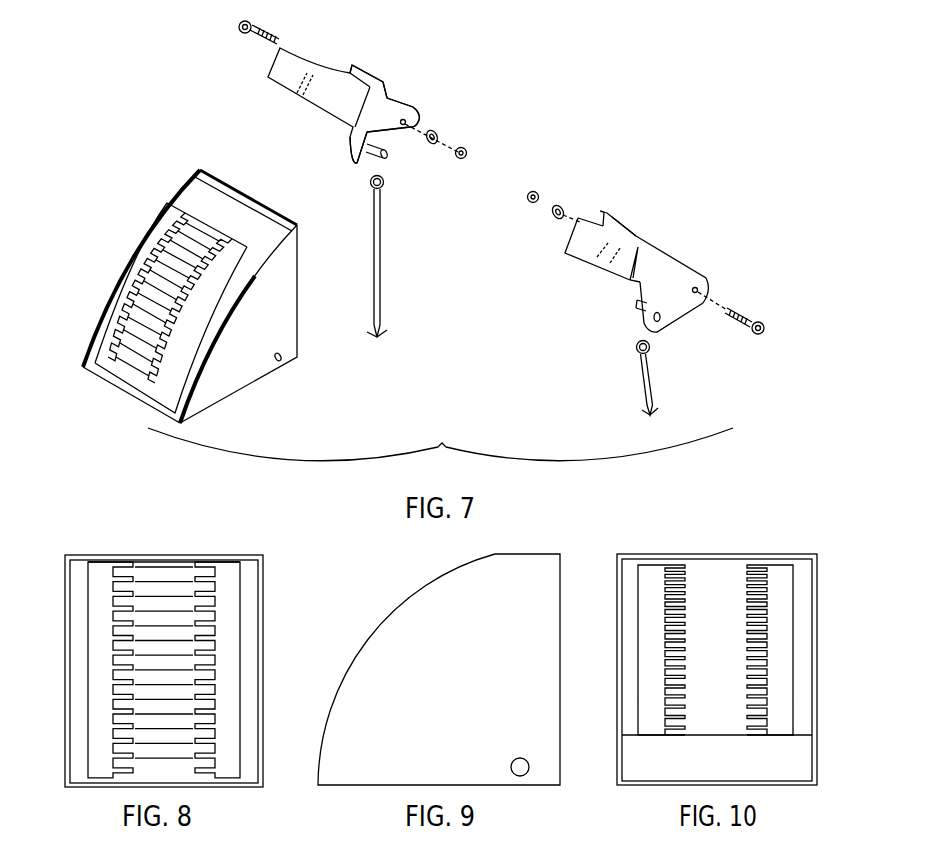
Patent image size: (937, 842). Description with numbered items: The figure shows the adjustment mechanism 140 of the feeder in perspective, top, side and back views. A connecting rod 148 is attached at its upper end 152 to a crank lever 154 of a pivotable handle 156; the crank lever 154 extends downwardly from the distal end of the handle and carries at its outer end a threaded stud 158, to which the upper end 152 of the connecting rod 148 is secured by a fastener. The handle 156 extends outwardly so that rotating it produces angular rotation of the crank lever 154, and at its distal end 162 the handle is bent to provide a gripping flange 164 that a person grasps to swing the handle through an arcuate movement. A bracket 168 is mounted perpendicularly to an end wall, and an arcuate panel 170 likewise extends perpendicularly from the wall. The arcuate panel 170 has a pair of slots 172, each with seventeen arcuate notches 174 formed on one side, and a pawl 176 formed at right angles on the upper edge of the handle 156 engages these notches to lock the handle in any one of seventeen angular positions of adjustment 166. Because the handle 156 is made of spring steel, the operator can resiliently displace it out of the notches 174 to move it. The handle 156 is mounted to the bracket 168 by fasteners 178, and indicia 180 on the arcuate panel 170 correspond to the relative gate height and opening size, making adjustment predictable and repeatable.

In FIG. 7, the adjustment mechanism 140 is at (440, 453).
In FIG. 7, the connecting rod 148 is at (382, 240).
In FIG. 7, the upper end 152 is at (382, 298).
In FIG. 7, the crank lever 154 is at (360, 157).
In FIG. 7, the pivotable handle 156 is at (342, 102).
In FIG. 7, the threaded stud 158 is at (387, 157).
In FIG. 7, the distal end 162 is at (277, 107).
In FIG. 7, the gripping flange 164 is at (280, 67).
In FIG. 7, the angular positions of adjustment 166 is at (93, 373).
In FIG. 8, the angular positions of adjustment 166 is at (105, 552).
In FIG. 10, the angular positions of adjustment 166 is at (657, 552).
In FIG. 7, the bracket 168 is at (280, 297).
In FIG. 9, the bracket 168 is at (435, 612).
In FIG. 7, the arcuate panel 170 is at (173, 192).
In FIG. 8, the arcuate panel 170 is at (248, 594).
In FIG. 10, the arcuate panel 170 is at (630, 587).
In FIG. 7, the slots 172 is at (123, 282).
In FIG. 8, the slots 172 is at (98, 663).
In FIG. 10, the slots 172 is at (650, 633).
In FIG. 7, the arcuate notches 174 is at (120, 323).
In FIG. 8, the arcuate notches 174 is at (118, 742).
In FIG. 10, the arcuate notches 174 is at (753, 707).
In FIG. 7, the pawl 176 is at (367, 75).
In FIG. 7, the fasteners 178 is at (243, 27).
In FIG. 8, the indicia 180 is at (177, 597).